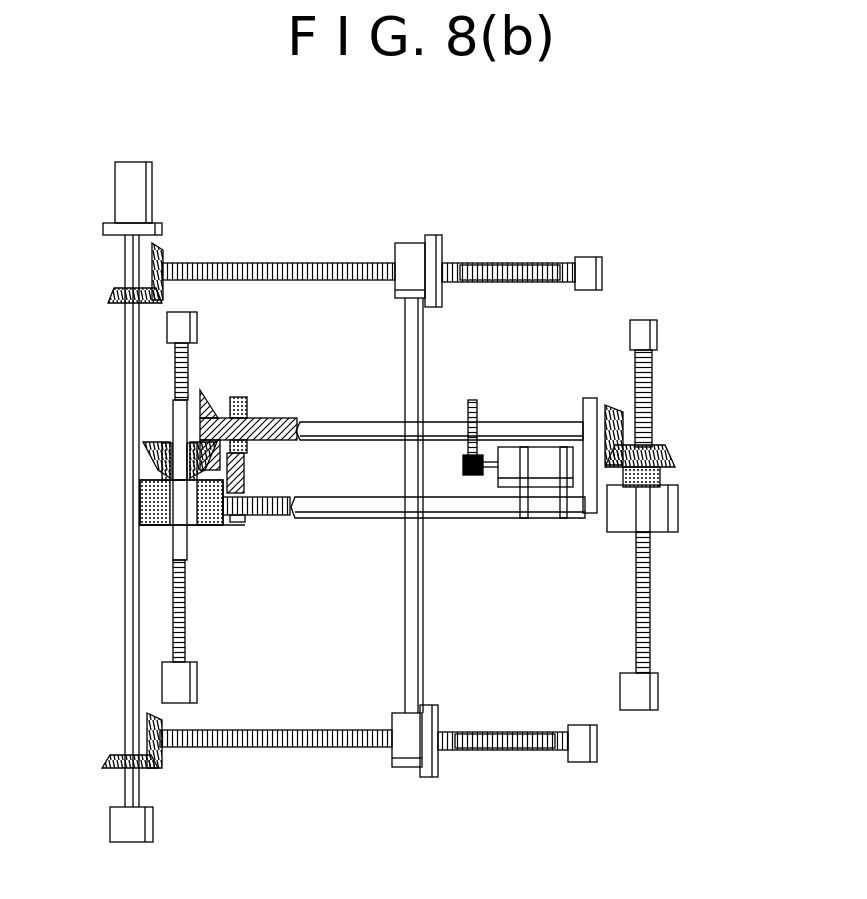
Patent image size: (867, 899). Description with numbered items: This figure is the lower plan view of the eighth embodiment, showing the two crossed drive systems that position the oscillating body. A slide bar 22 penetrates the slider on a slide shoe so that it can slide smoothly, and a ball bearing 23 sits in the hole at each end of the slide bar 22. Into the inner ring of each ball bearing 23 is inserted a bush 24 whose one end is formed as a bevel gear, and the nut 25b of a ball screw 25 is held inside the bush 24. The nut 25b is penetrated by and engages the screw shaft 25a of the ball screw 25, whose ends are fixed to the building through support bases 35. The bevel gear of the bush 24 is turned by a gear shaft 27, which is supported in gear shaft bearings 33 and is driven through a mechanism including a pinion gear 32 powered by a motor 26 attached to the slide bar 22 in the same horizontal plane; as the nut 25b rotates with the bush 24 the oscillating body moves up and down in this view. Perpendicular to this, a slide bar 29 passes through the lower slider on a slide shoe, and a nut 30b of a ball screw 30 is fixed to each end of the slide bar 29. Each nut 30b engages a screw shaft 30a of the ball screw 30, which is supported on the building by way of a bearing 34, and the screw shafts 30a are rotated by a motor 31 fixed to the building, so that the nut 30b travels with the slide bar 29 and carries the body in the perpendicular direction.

The slide bar 22 is at (462, 518).
The ball bearing 23 is at (210, 525).
The bush 24 is at (160, 473).
The ball screw 25 is at (172, 366).
The screw shaft 25a is at (175, 397).
The nut 25b is at (172, 442).
The motor 26 is at (540, 518).
The gear shaft 27 is at (335, 421).
The slide bar 29 is at (425, 328).
The ball screw 30 is at (510, 262).
The screw shaft 30a is at (548, 265).
The nut 30b is at (440, 252).
The motor 31 is at (152, 178).
The pinion gear 32 is at (468, 412).
The gear shaft bearing 33 is at (240, 396).
The bearing 34 is at (600, 272).
The support base 35 is at (197, 326).